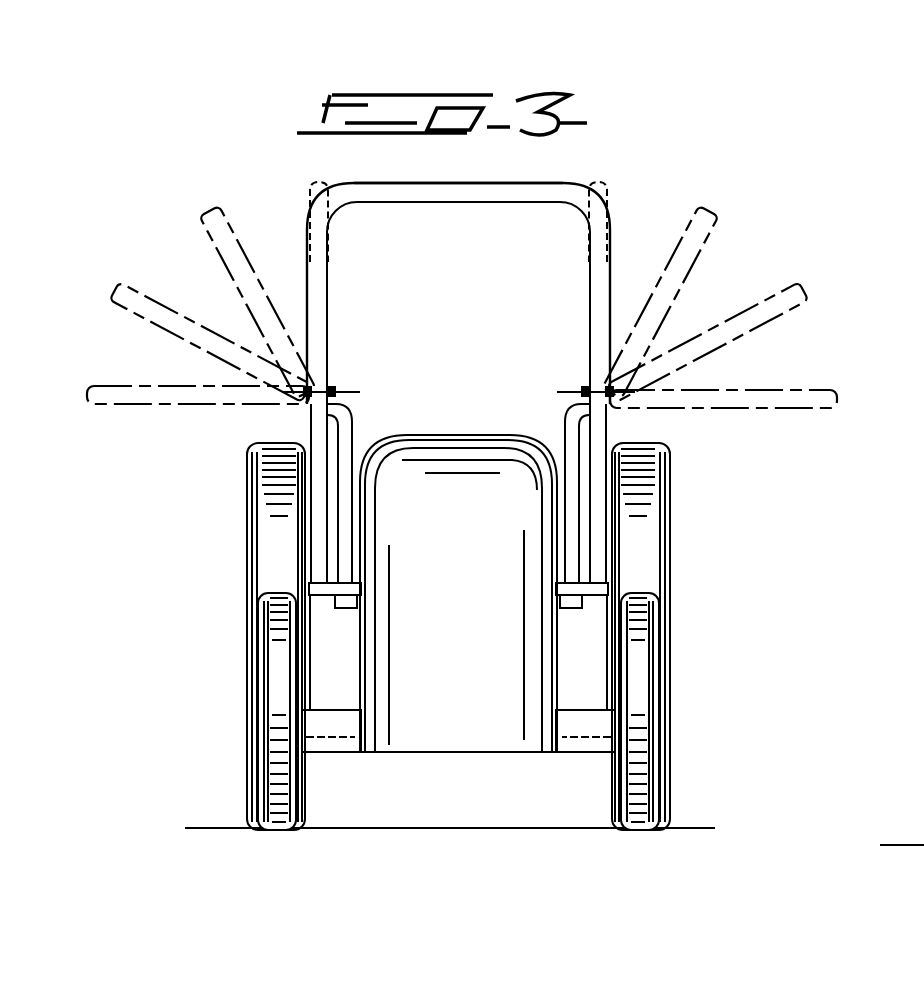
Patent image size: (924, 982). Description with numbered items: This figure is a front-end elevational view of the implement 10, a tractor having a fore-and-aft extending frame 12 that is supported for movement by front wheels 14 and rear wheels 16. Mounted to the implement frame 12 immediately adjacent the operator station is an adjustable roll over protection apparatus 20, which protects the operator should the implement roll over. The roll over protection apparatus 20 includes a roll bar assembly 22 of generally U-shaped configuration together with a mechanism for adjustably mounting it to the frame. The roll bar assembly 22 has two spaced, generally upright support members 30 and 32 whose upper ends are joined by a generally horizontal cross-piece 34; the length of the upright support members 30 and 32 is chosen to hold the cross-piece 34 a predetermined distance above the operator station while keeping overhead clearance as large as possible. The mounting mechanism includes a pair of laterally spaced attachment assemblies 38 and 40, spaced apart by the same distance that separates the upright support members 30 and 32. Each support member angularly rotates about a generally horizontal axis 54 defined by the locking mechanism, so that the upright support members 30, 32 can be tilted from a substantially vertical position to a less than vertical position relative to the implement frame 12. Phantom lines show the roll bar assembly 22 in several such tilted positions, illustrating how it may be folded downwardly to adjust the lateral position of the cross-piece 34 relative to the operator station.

The implement 10 is at (505, 486).
The frame 12 is at (458, 756).
The front wheels 14 is at (463, 711).
The rear wheels 16 is at (459, 636).
The roll over protection apparatus 20 is at (469, 265).
The roll bar assembly 22 is at (458, 303).
The upright support member 30 is at (567, 446).
The upright support member 32 is at (348, 446).
The cross-piece 34 is at (458, 169).
The attachment assembly 38 is at (550, 493).
The attachment assembly 40 is at (363, 493).
The horizontal axis 54 is at (458, 371).